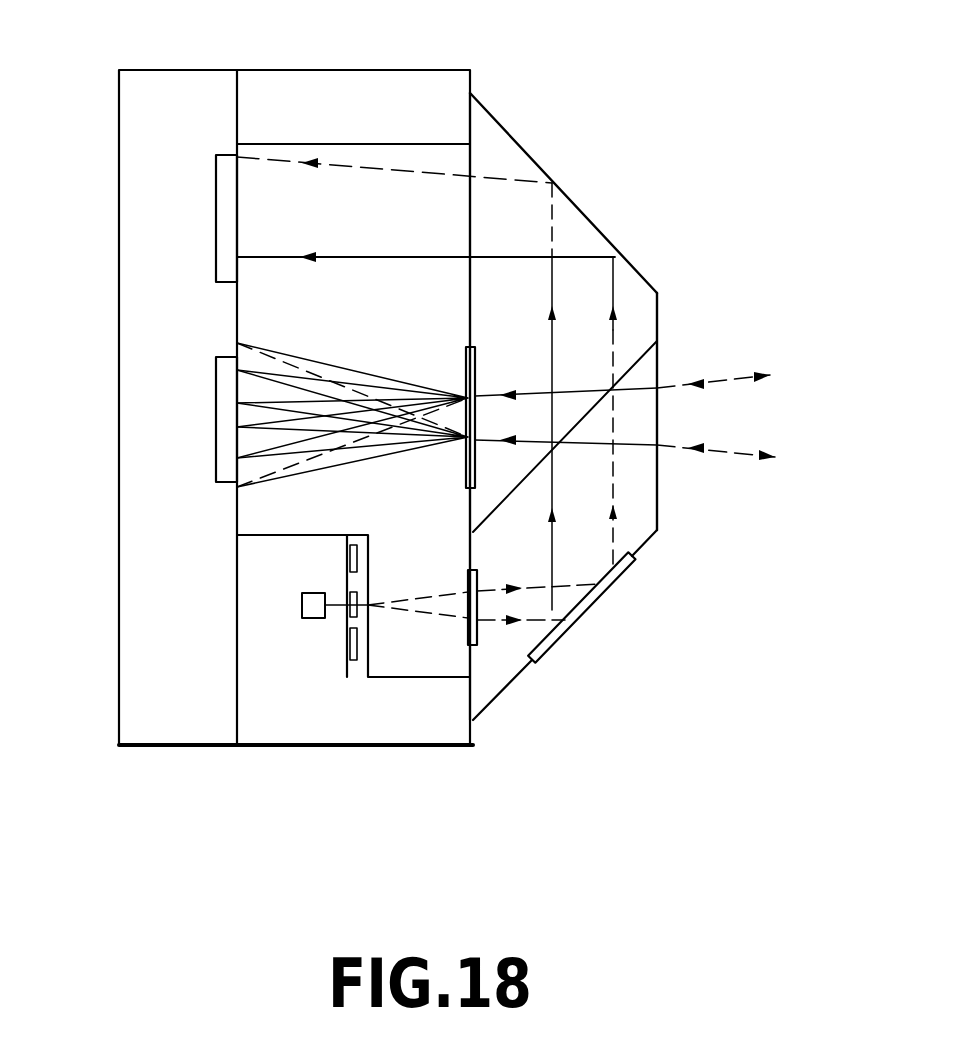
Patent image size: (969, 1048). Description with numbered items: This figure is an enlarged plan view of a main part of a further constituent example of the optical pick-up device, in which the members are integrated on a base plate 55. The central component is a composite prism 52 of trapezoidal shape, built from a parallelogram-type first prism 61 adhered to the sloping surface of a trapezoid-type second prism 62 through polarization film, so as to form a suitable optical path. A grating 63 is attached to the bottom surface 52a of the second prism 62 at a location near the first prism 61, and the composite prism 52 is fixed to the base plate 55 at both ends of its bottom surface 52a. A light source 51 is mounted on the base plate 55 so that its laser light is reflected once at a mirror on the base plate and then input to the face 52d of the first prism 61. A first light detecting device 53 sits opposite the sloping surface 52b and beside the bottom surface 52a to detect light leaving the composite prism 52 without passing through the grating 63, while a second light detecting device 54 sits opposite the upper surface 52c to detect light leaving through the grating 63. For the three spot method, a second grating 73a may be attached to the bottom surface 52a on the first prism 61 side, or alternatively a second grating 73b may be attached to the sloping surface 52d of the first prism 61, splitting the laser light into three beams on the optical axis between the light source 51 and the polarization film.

The light source 51 is at (311, 618).
The composite prism 52 is at (597, 363).
The bottom surface 52a is at (470, 297).
The sloping surface 52b is at (520, 147).
The upper surface 52c is at (657, 320).
The sloping surface of first prism 52d is at (647, 548).
The first light detecting device 53 is at (216, 212).
The second light detecting device 54 is at (216, 419).
The base plate 55 is at (182, 727).
The first prism 61 is at (637, 497).
The second prism 62 is at (527, 283).
The grating 63 is at (467, 472).
The second grating 73a is at (478, 633).
The second grating 73b is at (570, 632).